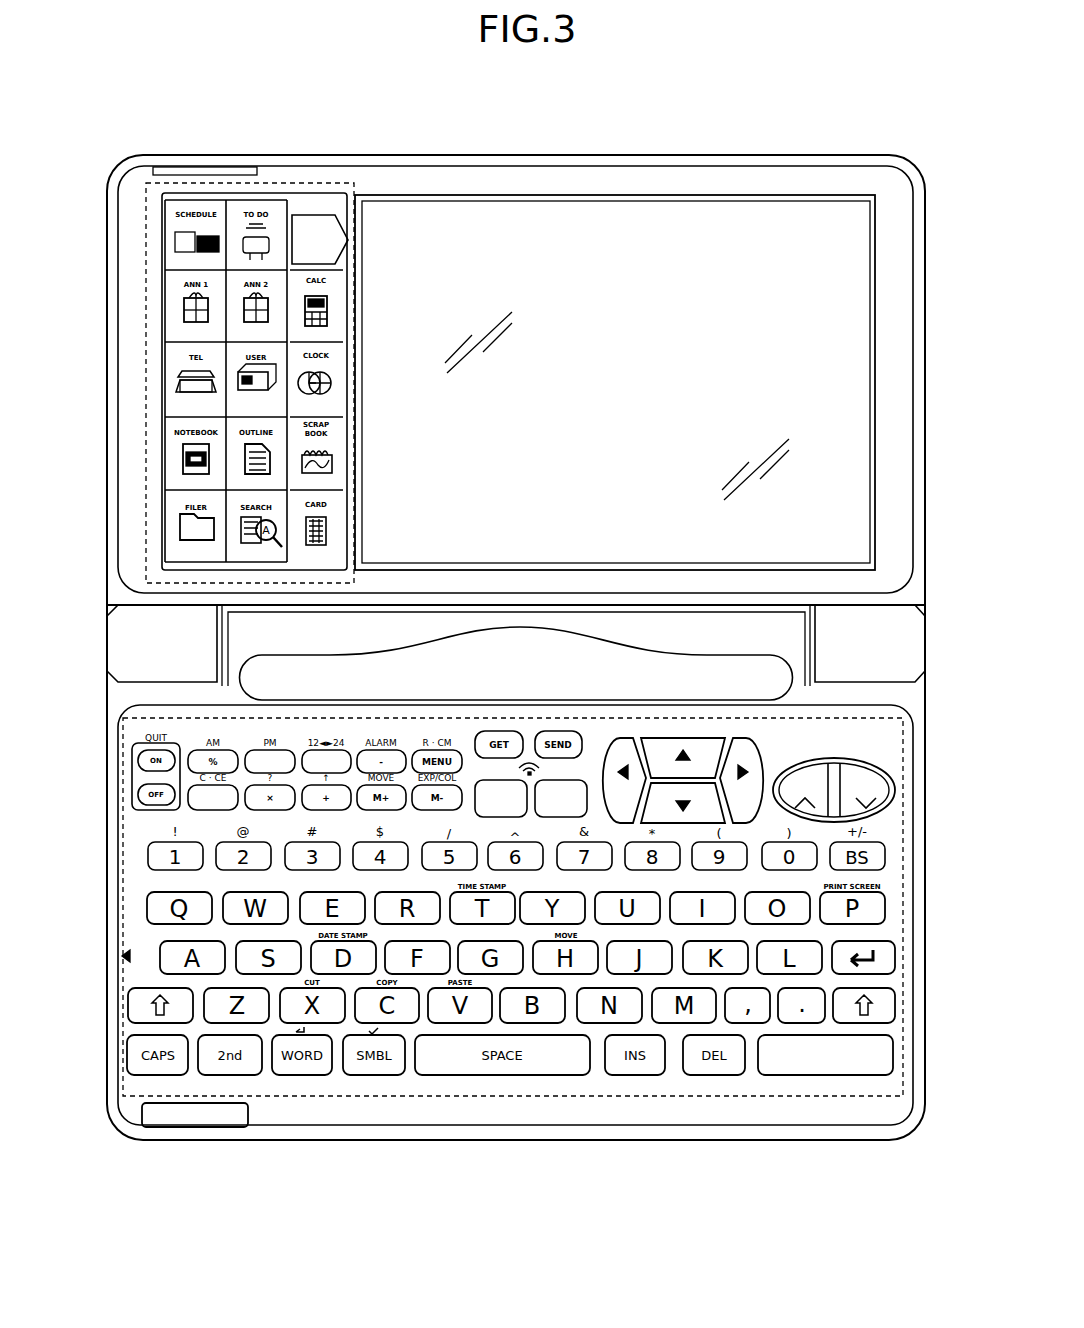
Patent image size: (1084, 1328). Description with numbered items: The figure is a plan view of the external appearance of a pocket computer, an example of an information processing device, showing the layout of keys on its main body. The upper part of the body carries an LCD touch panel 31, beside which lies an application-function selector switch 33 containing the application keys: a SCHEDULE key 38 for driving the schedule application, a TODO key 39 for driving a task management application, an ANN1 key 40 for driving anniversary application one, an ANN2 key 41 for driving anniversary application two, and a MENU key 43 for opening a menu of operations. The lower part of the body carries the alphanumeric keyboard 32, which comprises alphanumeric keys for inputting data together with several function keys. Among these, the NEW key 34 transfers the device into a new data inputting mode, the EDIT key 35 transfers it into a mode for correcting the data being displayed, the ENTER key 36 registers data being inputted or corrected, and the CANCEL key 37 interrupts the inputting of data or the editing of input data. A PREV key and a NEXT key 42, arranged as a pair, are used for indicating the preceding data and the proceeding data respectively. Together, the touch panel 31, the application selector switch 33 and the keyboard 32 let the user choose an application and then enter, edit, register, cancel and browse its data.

The LCD touch panel 31 is at (578, 230).
The alphanumeric keyboard 32 is at (297, 1095).
The application-function selector switch 33 is at (205, 182).
The NEW key 34 is at (481, 783).
The EDIT key 35 is at (580, 783).
The ENTER key 36 is at (828, 1076).
The CANCEL key 37 is at (190, 808).
The SCHEDULE key 38 is at (182, 199).
The TODO key 39 is at (272, 199).
The ANN1 key 40 is at (170, 300).
The ANN2 key 41 is at (240, 325).
The PREV key and NEXT key 42 is at (852, 776).
The MENU key 43 is at (344, 238).